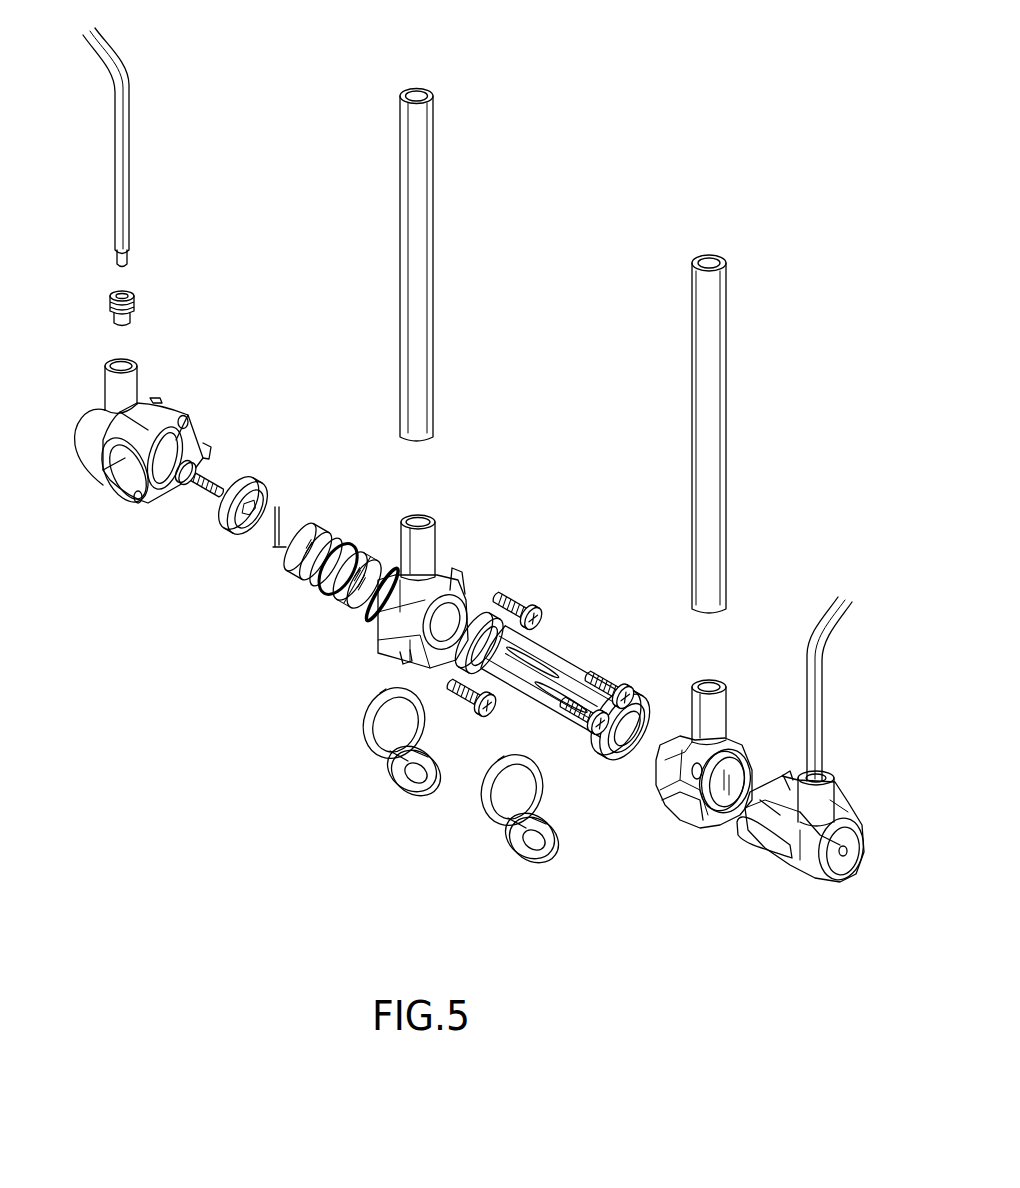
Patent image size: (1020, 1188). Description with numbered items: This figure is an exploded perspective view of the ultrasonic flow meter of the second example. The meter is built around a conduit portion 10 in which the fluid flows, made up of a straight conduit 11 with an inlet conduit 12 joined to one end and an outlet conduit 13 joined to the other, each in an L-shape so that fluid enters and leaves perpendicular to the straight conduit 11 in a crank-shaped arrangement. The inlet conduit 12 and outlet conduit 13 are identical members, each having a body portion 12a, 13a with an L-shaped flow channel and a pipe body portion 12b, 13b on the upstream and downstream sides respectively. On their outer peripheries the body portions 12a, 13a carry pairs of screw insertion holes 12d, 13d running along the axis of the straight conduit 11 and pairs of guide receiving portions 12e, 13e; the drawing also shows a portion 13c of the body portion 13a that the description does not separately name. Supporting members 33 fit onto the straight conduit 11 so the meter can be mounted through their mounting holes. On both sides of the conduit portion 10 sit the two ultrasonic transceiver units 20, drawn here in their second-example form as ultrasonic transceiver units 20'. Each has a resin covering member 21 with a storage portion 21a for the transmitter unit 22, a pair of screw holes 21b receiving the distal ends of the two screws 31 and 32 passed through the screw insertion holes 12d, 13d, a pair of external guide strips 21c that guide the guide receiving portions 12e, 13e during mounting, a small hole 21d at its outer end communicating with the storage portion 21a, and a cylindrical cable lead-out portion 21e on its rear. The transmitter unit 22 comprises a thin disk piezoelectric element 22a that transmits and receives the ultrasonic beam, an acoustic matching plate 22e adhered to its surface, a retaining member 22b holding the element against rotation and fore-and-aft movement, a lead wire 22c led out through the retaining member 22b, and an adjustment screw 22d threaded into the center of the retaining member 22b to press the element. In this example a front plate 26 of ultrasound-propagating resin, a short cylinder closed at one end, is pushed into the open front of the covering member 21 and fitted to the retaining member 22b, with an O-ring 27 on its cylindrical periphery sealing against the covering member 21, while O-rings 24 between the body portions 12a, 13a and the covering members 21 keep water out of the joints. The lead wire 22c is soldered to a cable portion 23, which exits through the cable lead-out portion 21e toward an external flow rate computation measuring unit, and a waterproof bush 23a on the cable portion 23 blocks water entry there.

The conduit portion 10 is at (565, 680).
The straight conduit 11 is at (550, 680).
The inlet conduit 12 is at (413, 397).
The body portion 12a is at (407, 620).
The pipe body portion 12b is at (421, 153).
The screw insertion holes 12d is at (455, 573).
The guide receiving portions 12e is at (382, 615).
The outlet conduit 13 is at (710, 563).
The body portion 13a is at (690, 759).
The pipe body portion 13b is at (715, 327).
The end face of connector block 13c is at (737, 767).
The screw insertion holes 13d is at (693, 763).
The guide receiving portions 13e is at (668, 783).
The ultrasonic transceiver unit 20 is at (792, 860).
The ultrasonic transceiver unit 20' is at (151, 420).
The covering member 21 is at (467, 627).
The storage portion 21a is at (160, 467).
The screw holes 21b is at (182, 415).
The guide strips 21c is at (203, 447).
The small hole 21d is at (842, 857).
The cable lead-out portion 21e is at (107, 367).
The transmitter unit 22 is at (278, 524).
The piezoelectric element 22a is at (293, 563).
The retaining member 22b is at (237, 530).
The lead wire 22c is at (275, 545).
The adjustment screw 22d is at (198, 490).
The acoustic matching plate 22e is at (348, 523).
The cable portion 23 is at (124, 172).
The waterproof bush 23a is at (108, 291).
The O-ring 24 is at (402, 563).
The front plate 26 is at (378, 553).
The O-ring 27 is at (320, 583).
The screw 31 is at (515, 598).
The screw 32 is at (597, 672).
The supporting members 33 is at (367, 732).